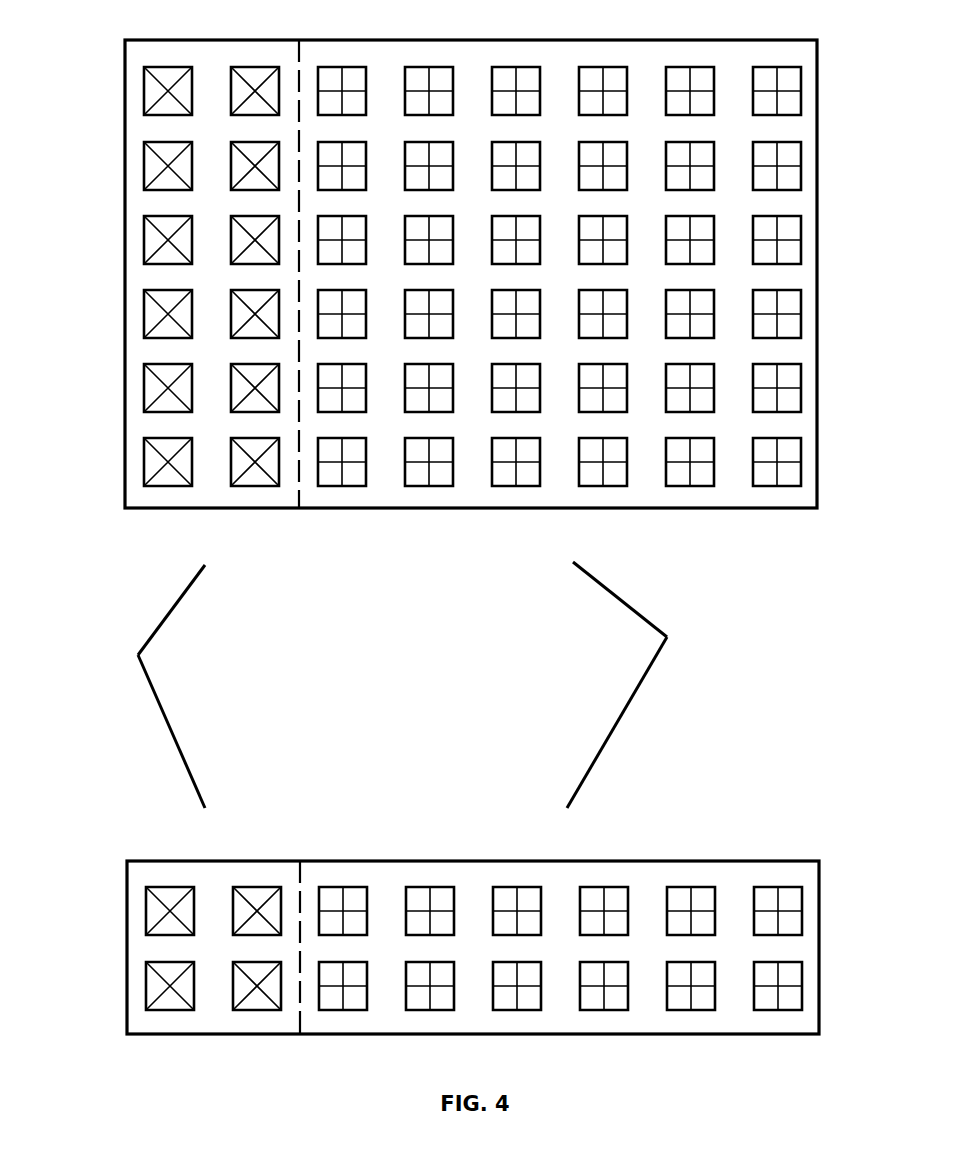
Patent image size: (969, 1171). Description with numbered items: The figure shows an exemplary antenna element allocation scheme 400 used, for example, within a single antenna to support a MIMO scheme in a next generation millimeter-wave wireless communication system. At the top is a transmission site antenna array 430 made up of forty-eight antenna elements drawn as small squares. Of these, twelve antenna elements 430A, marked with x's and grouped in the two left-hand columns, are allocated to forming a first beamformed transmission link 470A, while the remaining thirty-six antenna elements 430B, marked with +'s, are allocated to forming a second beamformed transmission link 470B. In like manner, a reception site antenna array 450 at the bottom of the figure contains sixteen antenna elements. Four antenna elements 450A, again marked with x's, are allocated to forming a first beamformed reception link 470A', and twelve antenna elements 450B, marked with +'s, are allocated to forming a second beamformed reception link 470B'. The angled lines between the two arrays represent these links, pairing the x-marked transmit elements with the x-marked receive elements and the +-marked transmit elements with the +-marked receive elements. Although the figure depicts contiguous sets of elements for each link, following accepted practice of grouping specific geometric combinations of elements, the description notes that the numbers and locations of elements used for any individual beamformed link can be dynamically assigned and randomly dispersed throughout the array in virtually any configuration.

The antenna element allocation scheme 400 is at (435, 517).
The transmission site antenna array 430 is at (434, 294).
The antenna elements 430A is at (292, 517).
The antenna elements 430B is at (812, 517).
The reception site antenna array 450 is at (439, 930).
The antenna elements 450A is at (292, 853).
The antenna elements 450B is at (813, 852).
The first beamformed transmission link 470A is at (190, 610).
The first beamformed reception link 470A' is at (202, 731).
The second beamformed transmission link 470B is at (616, 602).
The second beamformed reception link 470B' is at (585, 722).